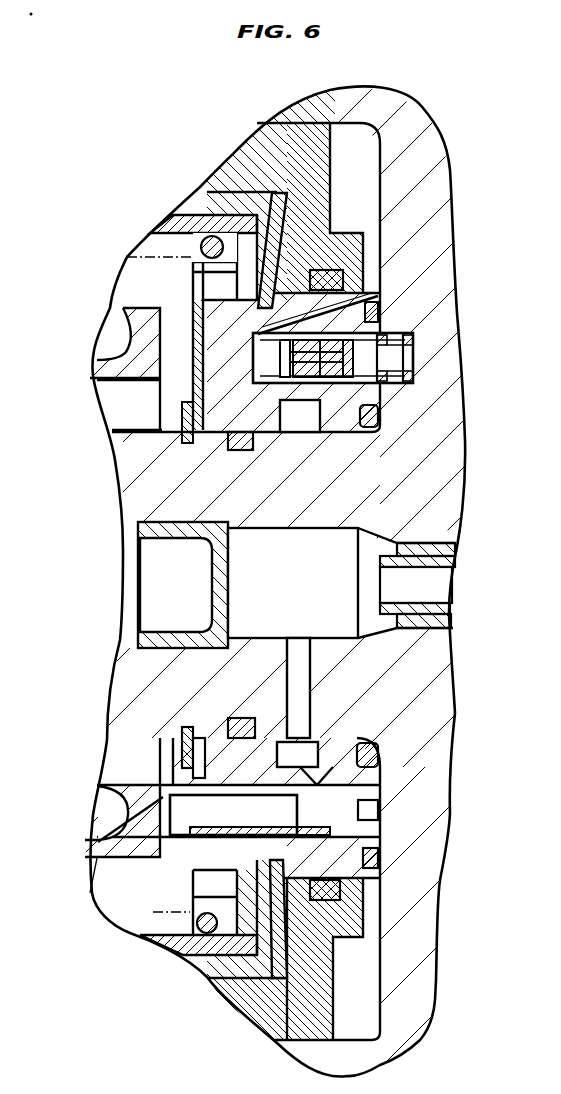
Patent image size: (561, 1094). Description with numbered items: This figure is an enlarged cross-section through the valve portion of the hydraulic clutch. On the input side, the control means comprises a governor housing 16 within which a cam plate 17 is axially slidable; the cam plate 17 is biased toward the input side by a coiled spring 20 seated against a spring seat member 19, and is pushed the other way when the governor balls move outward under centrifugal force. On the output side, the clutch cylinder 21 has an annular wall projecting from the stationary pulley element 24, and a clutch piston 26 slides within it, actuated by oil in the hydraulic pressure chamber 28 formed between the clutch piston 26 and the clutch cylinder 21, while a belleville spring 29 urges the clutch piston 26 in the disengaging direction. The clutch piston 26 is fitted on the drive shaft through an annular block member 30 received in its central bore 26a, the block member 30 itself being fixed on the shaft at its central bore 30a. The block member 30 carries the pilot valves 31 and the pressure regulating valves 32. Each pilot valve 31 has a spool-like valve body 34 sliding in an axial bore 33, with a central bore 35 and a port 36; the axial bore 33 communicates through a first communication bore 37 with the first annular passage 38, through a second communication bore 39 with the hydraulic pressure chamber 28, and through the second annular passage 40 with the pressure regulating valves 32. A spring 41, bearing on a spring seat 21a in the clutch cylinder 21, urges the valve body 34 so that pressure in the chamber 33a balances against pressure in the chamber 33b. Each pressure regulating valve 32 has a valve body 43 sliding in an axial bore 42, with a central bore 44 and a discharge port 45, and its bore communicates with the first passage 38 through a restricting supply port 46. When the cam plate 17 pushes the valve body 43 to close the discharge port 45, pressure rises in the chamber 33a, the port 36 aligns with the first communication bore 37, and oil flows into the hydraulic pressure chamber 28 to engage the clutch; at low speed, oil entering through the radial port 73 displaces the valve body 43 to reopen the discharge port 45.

The governor housing 16 is at (213, 215).
The cam plate 17 is at (100, 310).
The spring seat member 19 is at (200, 262).
The coiled spring 20 is at (200, 242).
The clutch cylinder 21 is at (340, 93).
The spring seat 21a is at (413, 357).
The stationary pulley element 24 is at (427, 147).
The clutch piston 26 is at (317, 163).
The central bore 26a is at (380, 293).
The hydraulic pressure chamber 28 is at (365, 190).
The belleville spring 29 is at (285, 215).
The block member 30 is at (217, 402).
The central bore 30a is at (230, 473).
The pilot valve 31 is at (345, 400).
The pressure regulating valve 32 is at (350, 885).
The axial bore 33 is at (270, 380).
The chamber 33a is at (407, 377).
The chamber 33b is at (257, 345).
The valve body 34 is at (285, 378).
The central bore 35 is at (190, 340).
The port 36 is at (380, 407).
The first communication bore 37 is at (305, 380).
The first annular passage 38 is at (320, 378).
The second communication bore 39 is at (380, 308).
The second annular passage 40 is at (380, 393).
The spring 41 is at (413, 380).
The axial bore 42 is at (380, 850).
The valve body 43 is at (160, 767).
The central bore 44 is at (263, 810).
The discharge port 45 is at (177, 840).
The supply port 46 is at (305, 820).
The radial port 73 is at (295, 680).